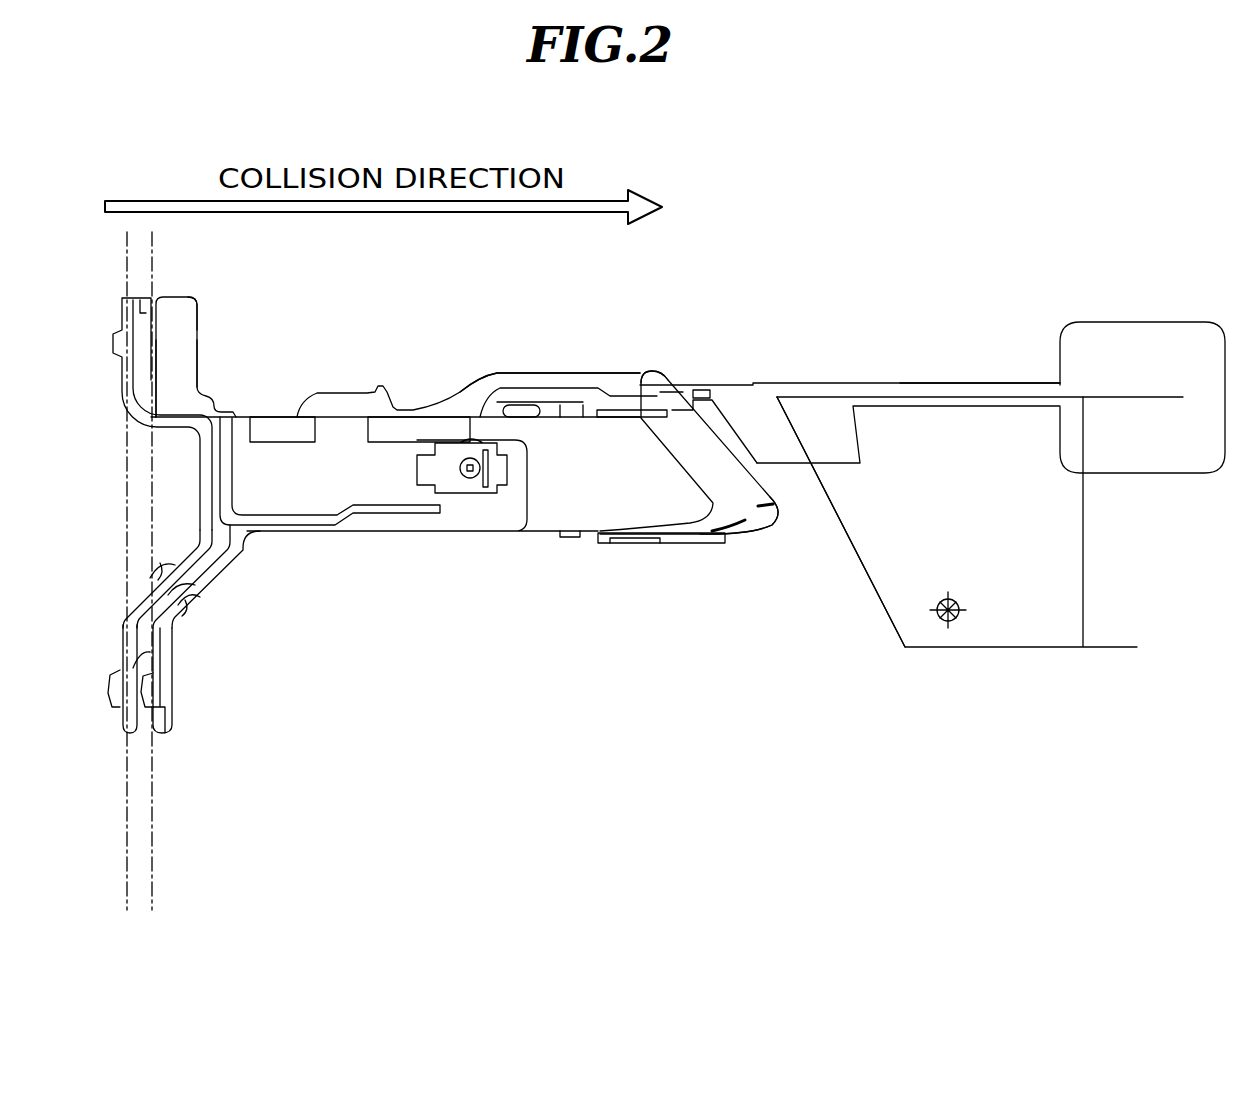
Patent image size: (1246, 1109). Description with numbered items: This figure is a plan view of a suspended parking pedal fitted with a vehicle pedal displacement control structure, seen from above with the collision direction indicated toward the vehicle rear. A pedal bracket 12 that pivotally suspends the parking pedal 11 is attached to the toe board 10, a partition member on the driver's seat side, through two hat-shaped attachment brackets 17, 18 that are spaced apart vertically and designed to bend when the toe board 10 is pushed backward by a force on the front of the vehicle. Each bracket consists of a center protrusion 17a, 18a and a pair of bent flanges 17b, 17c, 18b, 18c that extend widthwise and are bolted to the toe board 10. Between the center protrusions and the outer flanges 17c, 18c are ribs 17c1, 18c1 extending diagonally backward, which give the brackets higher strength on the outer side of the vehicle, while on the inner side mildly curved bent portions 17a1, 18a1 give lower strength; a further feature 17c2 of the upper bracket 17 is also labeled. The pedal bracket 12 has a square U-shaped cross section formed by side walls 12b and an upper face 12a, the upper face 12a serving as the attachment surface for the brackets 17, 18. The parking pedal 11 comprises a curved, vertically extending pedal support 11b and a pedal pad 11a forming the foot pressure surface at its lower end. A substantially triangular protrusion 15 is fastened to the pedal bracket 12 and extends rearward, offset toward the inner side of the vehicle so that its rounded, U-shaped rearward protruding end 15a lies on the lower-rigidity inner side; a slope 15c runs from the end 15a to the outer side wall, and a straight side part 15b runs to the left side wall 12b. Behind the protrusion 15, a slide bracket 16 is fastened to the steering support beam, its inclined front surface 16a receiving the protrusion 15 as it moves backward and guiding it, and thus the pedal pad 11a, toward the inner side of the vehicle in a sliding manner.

The toe board 10 is at (127, 828).
The parking pedal 11 is at (808, 378).
The pedal pad 11a is at (1130, 330).
The pedal support 11b is at (963, 385).
The pedal bracket 12 is at (623, 495).
The upper face 12a is at (627, 442).
The side wall 12b is at (550, 538).
The protrusion 15 is at (741, 548).
The rearward protruding end 15a is at (778, 505).
The side part 15b is at (678, 543).
The slope 15c is at (728, 423).
The slide bracket 16 is at (1036, 628).
The front surface 16a is at (890, 620).
The upper attachment bracket 17 is at (200, 356).
The center protrusion 17a is at (222, 557).
The bent portion 17a1 is at (192, 605).
The bent flange 17b is at (110, 692).
The bent flange 17c is at (150, 375).
The rib 17c1 is at (198, 330).
The holder hook flange 17c2 is at (297, 413).
The lower attachment bracket 18 is at (152, 432).
The center protrusion 18a is at (207, 470).
The bent portion 18a1 is at (160, 563).
The bent flange 18b is at (125, 652).
The bent flange 18c is at (120, 318).
The rib 18c1 is at (140, 308).